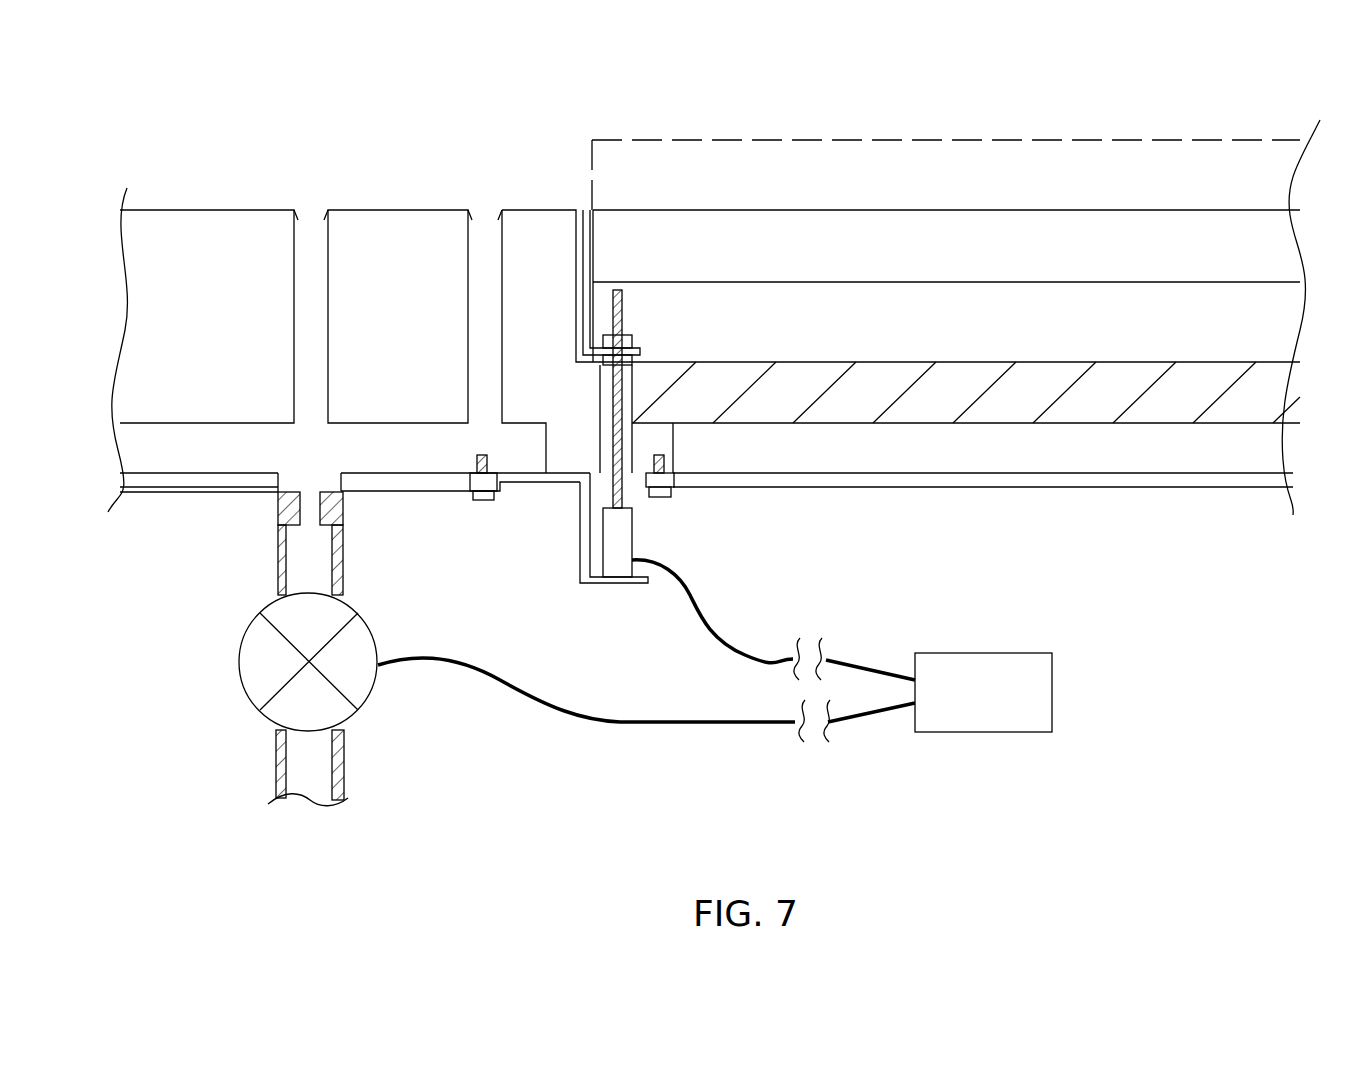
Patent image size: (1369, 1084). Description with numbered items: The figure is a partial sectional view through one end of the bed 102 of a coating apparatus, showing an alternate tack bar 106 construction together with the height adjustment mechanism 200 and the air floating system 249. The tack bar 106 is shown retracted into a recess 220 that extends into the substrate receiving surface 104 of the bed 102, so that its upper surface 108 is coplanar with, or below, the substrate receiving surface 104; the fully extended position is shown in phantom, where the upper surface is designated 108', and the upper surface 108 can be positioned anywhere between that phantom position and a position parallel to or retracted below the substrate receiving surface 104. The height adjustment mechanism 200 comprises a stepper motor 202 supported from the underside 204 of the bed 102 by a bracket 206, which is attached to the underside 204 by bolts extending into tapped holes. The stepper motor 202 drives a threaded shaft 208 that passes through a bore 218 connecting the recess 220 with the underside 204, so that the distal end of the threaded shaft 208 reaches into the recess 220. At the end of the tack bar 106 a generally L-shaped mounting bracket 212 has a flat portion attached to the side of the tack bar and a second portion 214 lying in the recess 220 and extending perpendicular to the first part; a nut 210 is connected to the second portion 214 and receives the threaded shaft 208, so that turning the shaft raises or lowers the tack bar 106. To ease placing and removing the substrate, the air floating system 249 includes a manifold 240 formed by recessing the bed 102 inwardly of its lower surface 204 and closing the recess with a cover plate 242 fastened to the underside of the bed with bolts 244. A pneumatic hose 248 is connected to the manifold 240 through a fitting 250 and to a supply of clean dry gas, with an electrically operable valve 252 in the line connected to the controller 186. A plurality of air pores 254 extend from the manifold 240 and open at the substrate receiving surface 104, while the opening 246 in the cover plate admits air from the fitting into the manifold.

The bed 102 is at (420, 364).
The substrate receiving surface 104 is at (384, 210).
The tack bar 106 is at (1013, 262).
The upper surface 108 is at (1191, 303).
The upper surface in fully extended position 108' is at (946, 142).
The controller 186 is at (1006, 704).
The height adjustment mechanism 200 is at (670, 547).
The stepper motor 202 is at (620, 565).
The underside 204 is at (563, 470).
The bracket 206 is at (580, 540).
The threaded shaft 208 is at (603, 303).
The nut 210 is at (640, 335).
The mounting bracket 212 is at (588, 222).
The second portion 214 is at (647, 352).
The bore 218 is at (633, 428).
The recess 220 is at (1206, 332).
The manifold 240 is at (1023, 461).
The cover plate 242 is at (372, 485).
The bolts 244 is at (477, 500).
The opening 246 is at (307, 482).
The pneumatic hose 248 is at (343, 752).
The air floating system 249 is at (200, 623).
The fitting 250 is at (282, 497).
The valve 252 is at (373, 630).
The air pores 254 is at (303, 285).